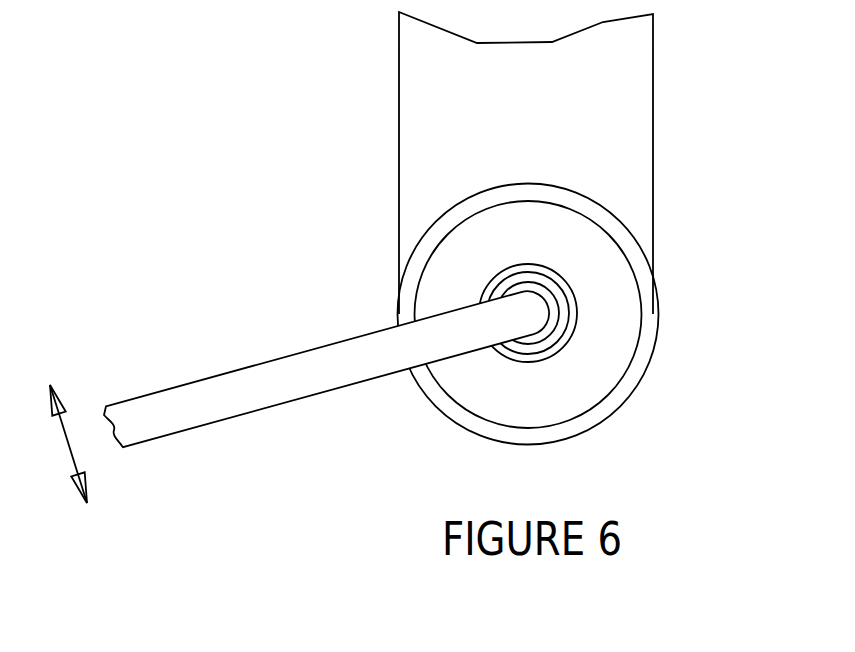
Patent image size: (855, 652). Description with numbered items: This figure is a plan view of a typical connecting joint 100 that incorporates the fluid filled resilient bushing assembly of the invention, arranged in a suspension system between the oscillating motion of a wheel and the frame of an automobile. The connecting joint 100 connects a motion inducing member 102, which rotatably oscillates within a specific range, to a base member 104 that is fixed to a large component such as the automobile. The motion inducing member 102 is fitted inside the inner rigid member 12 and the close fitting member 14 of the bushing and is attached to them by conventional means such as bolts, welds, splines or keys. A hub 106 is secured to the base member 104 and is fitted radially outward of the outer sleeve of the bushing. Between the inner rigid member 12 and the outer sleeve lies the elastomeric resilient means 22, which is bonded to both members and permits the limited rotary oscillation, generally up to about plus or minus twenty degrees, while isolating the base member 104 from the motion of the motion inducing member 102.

The connecting joint 100 is at (598, 240).
The motion inducing member 102 is at (207, 393).
The base member 104 is at (653, 135).
The hub 106 is at (647, 323).
The resilient means 22 is at (583, 388).
The inner rigid member 12 is at (557, 292).
The close fitting annular member 14 is at (550, 322).